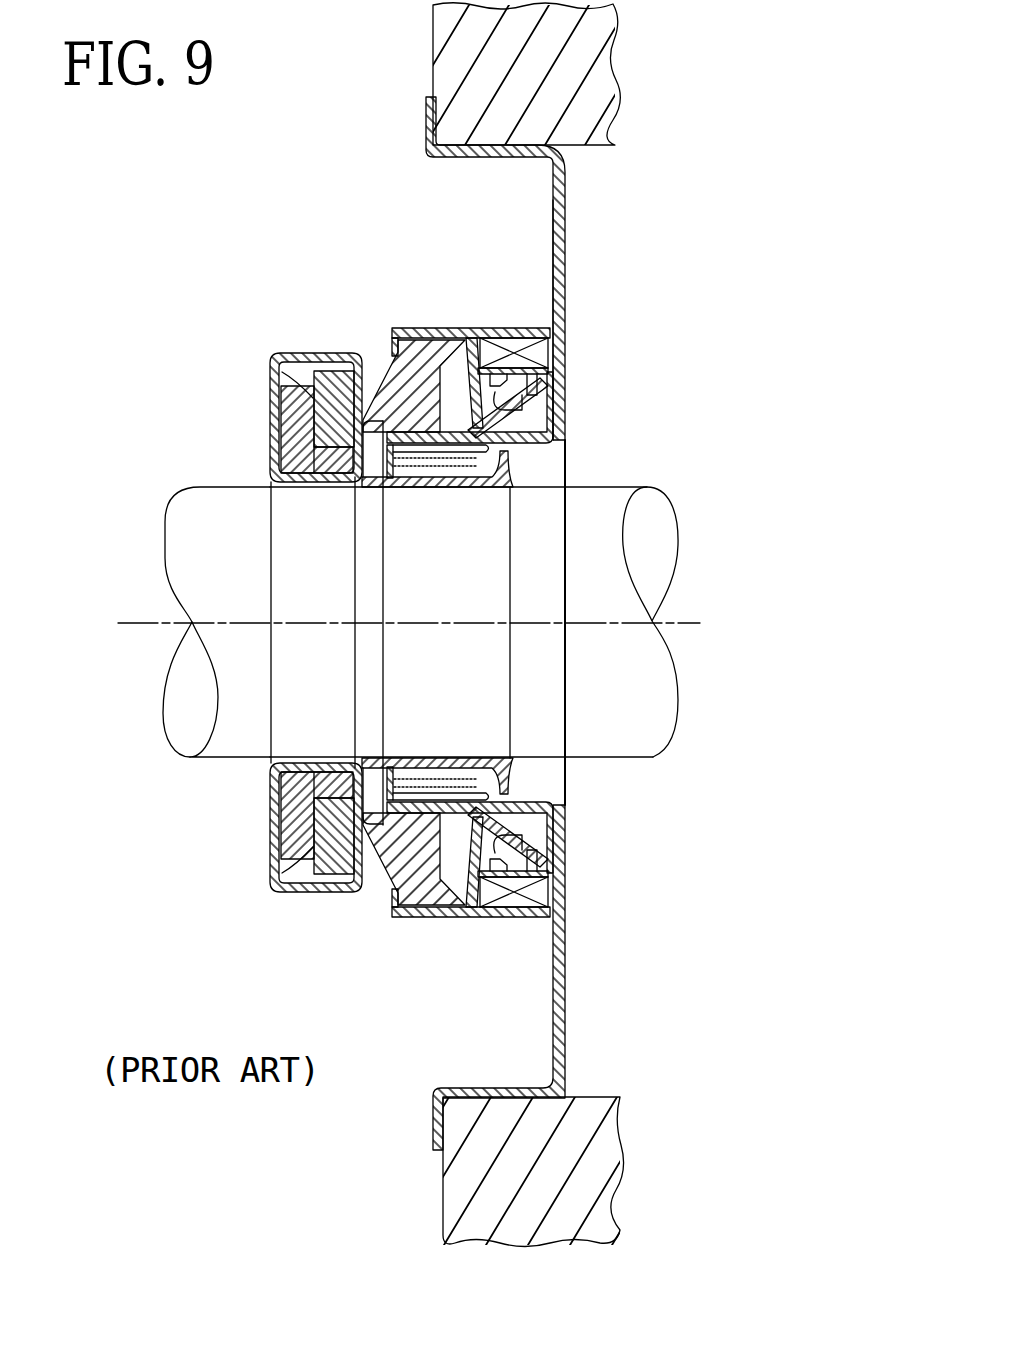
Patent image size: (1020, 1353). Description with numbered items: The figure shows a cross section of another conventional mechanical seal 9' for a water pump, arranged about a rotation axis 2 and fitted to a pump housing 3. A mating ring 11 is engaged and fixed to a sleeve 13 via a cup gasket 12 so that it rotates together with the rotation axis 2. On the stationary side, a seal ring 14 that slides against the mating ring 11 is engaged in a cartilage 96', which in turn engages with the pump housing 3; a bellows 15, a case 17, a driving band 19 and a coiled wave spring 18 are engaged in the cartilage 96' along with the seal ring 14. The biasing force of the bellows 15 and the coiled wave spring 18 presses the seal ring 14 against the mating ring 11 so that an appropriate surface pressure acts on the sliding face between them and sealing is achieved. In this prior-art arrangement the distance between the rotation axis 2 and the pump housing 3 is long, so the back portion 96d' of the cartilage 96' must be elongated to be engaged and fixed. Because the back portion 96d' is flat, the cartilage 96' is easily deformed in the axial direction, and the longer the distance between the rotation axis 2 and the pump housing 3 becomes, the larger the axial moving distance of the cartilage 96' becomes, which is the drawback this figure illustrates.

The rotation axis 2 is at (607, 572).
The pump housing 3 is at (573, 77).
The conventional mechanical seal 9' is at (499, 697).
The mating ring 11 is at (337, 353).
The cup gasket 12 is at (270, 372).
The sleeve 13 is at (262, 452).
The seal ring 14 is at (390, 370).
The bellows 15 is at (413, 328).
The case 17 is at (443, 327).
The coiled wave spring 18 is at (540, 350).
The driving band 19 is at (555, 395).
The cartilage 96' is at (554, 623).
The back portion 96d' is at (631, 320).